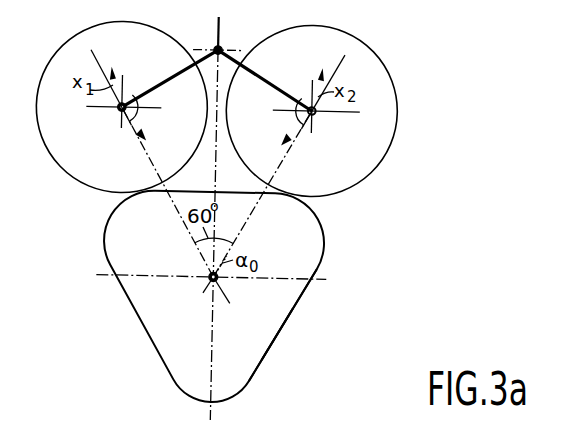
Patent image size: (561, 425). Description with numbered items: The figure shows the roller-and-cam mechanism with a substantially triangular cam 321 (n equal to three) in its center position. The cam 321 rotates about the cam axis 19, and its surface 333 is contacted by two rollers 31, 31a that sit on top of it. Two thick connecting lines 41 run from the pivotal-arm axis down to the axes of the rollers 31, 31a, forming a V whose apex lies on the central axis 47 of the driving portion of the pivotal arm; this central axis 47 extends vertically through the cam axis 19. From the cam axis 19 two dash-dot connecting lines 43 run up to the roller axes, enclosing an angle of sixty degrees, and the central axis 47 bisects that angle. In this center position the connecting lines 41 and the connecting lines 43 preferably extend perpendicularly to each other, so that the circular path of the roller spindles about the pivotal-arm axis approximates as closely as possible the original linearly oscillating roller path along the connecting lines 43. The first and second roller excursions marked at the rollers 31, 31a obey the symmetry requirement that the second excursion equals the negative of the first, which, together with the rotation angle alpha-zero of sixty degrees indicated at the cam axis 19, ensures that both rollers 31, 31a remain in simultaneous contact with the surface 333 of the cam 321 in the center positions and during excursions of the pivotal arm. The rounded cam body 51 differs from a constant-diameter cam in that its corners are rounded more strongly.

The cam axis 19 is at (208, 280).
The roller 31 is at (57, 75).
The roller 31a is at (386, 100).
The connecting lines between pivotal-arm axis and roller axes 41 is at (170, 72).
The connecting lines between cam axis and roller axes 43 is at (170, 200).
The central axis of the driving portion of the pivotal arm 47 is at (221, 33).
The cam body 51 is at (316, 248).
The triangular cam 321 is at (272, 313).
The surface of the triangular cam 333 is at (270, 348).